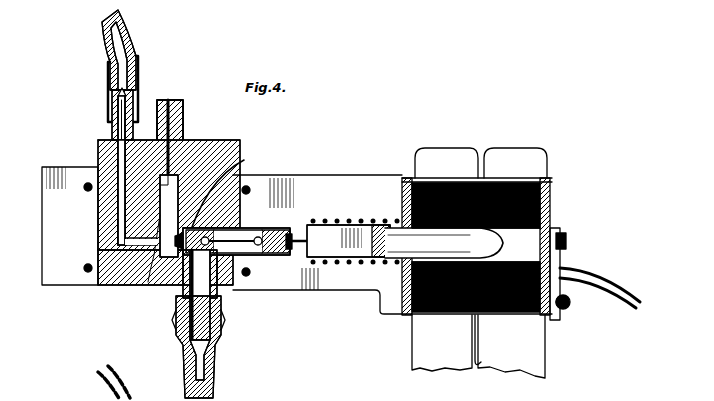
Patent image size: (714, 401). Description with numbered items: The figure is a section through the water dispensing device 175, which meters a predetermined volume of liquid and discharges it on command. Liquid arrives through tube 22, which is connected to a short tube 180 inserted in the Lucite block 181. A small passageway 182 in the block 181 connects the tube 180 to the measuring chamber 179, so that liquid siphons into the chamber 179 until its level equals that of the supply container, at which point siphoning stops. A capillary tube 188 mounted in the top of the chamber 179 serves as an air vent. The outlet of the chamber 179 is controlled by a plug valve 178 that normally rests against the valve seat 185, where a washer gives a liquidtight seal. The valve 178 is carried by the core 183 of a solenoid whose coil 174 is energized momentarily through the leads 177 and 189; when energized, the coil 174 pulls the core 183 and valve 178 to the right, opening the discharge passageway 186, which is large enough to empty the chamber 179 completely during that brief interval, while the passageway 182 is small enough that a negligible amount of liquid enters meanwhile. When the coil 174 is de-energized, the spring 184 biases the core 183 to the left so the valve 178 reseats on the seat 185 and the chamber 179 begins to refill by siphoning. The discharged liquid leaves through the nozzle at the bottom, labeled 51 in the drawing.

The tube 22 is at (130, 22).
The short tube 180 is at (112, 128).
The capillary tube 188 is at (185, 118).
The valve seat 185 is at (222, 173).
The Lucite block 181 is at (92, 208).
The passageway 182 is at (112, 240).
The plug valve 178 is at (240, 230).
The spring 184 is at (357, 220).
The solenoid coil 174 is at (532, 178).
The core 183 is at (440, 248).
The lead 177 is at (624, 290).
The lead 189 is at (590, 278).
The measuring chamber 179 is at (135, 285).
The passageway 186 is at (182, 262).
The water dispensing device 175 is at (268, 290).
The nozzle 51 is at (182, 368).